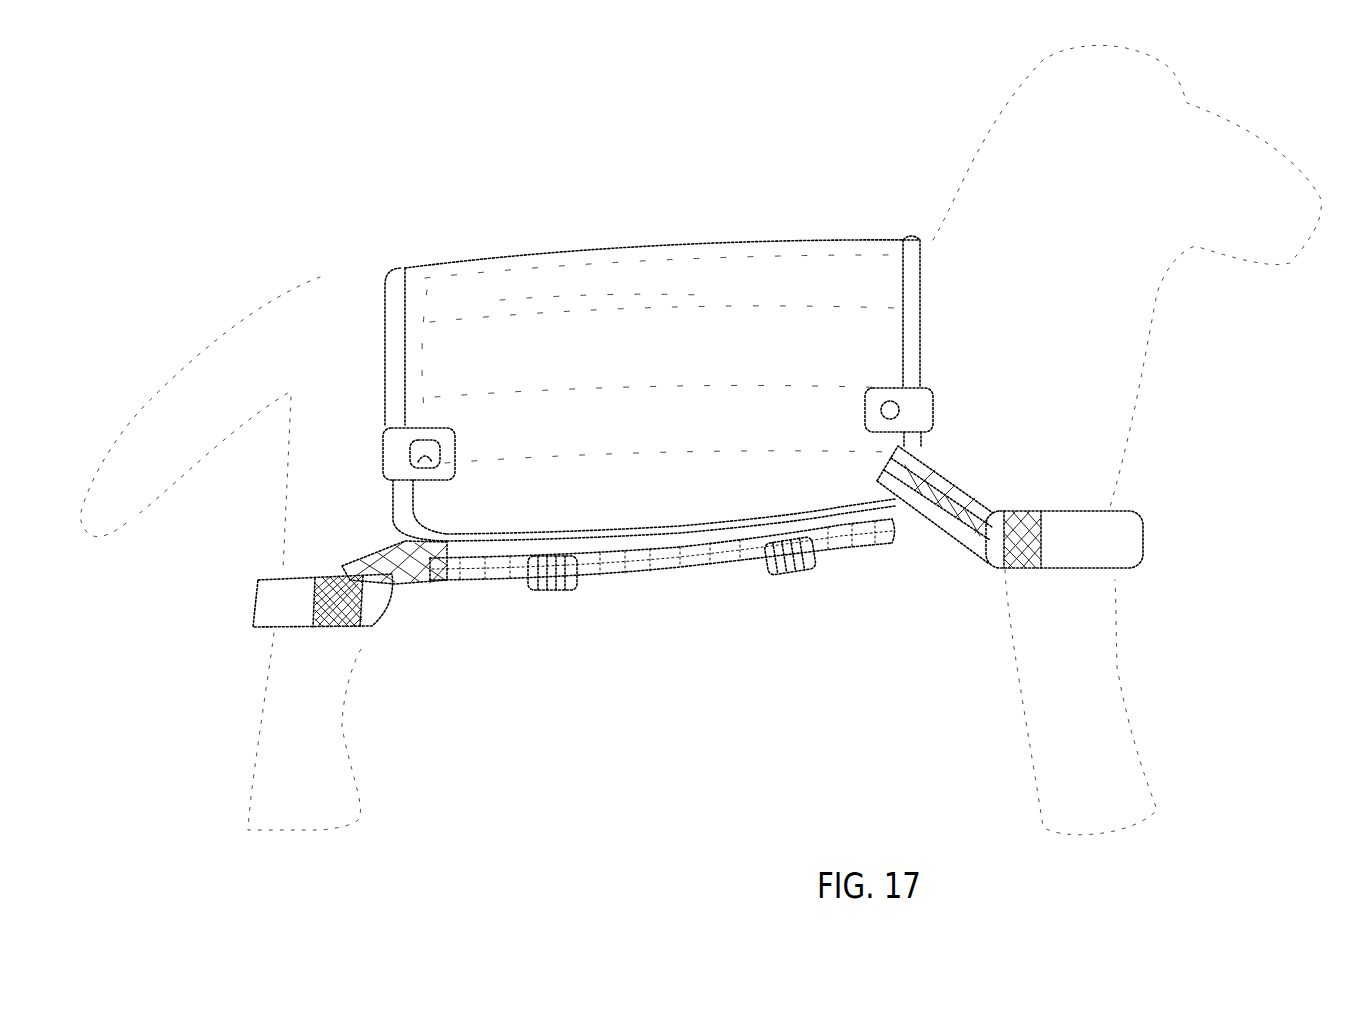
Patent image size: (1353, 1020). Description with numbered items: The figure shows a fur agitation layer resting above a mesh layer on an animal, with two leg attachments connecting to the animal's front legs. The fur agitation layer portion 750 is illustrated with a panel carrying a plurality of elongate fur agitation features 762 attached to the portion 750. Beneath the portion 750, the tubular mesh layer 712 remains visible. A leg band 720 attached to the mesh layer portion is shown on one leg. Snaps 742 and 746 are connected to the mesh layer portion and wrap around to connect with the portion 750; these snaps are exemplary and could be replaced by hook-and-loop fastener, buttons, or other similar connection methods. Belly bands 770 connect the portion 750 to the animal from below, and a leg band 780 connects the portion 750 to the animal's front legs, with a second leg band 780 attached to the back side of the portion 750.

The tubular mesh layer 712 is at (475, 568).
The leg band 720 is at (278, 605).
The snap 742 is at (410, 457).
The snap 746 is at (899, 410).
The fur agitation layer portion 750 is at (718, 240).
The elongate fur agitation features 762 is at (516, 287).
The belly bands 770 is at (552, 597).
The leg band 780 is at (1123, 539).